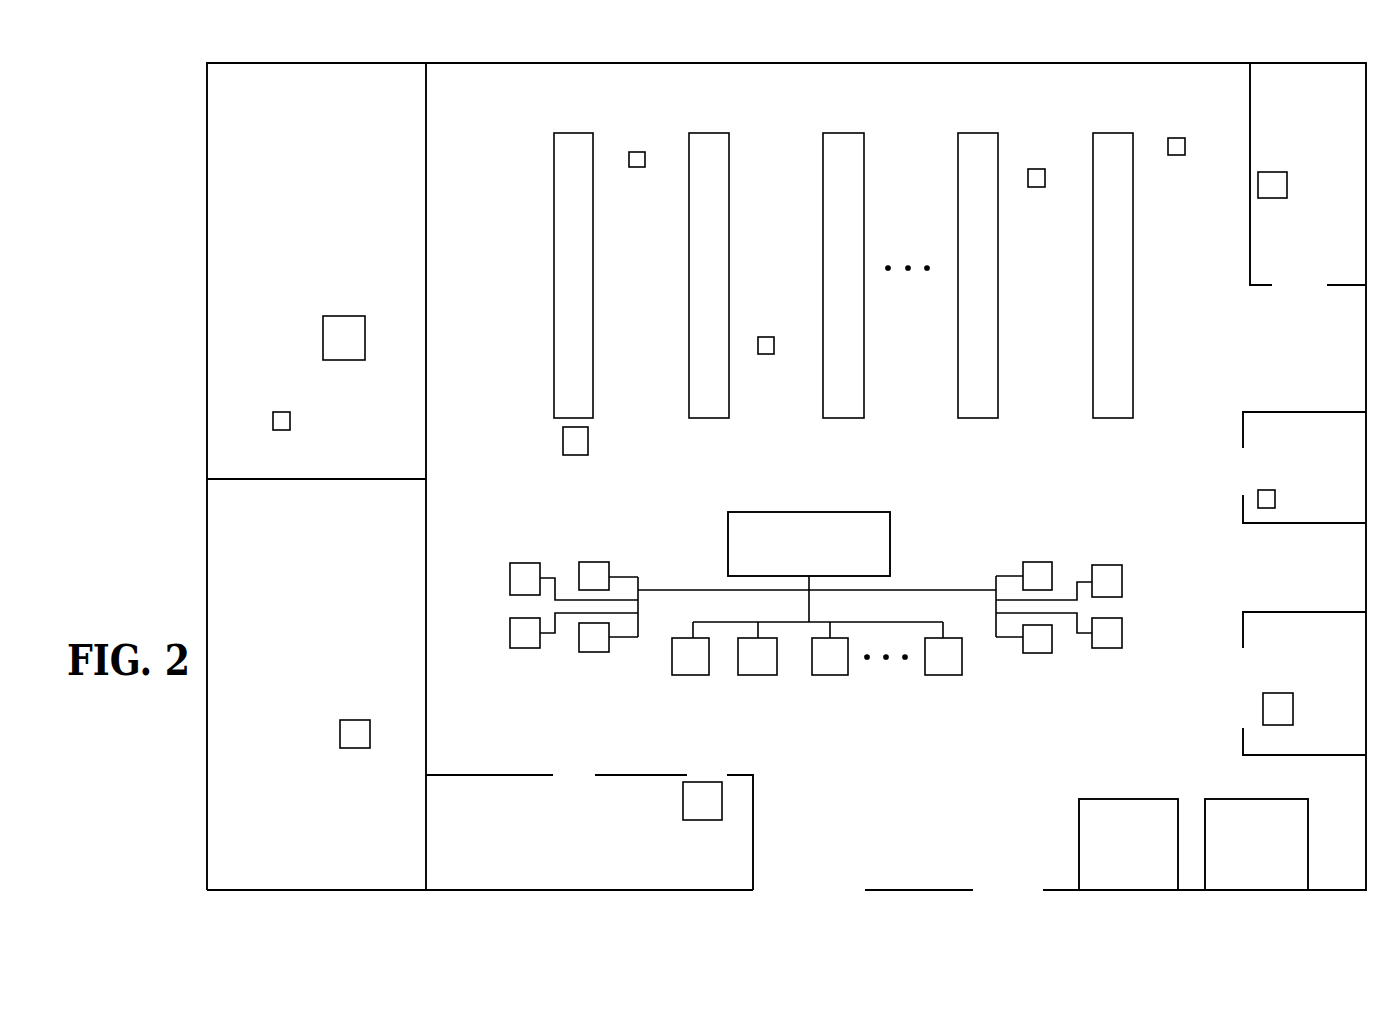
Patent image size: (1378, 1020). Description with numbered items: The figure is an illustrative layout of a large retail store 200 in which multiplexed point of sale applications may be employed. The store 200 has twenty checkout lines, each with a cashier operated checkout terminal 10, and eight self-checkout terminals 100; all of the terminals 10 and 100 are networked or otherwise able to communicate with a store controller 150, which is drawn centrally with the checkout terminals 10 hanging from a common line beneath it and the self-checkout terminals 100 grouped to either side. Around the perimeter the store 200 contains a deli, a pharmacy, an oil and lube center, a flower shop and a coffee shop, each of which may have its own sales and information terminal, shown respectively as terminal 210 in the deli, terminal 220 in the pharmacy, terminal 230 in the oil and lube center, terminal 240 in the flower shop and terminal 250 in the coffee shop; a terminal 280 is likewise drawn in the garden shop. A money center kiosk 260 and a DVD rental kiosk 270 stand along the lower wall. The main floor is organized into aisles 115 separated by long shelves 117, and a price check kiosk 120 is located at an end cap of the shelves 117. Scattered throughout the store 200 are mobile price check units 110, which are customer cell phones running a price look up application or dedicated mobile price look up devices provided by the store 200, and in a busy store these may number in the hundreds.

The store 200 is at (1223, 53).
The shelves 117 is at (1147, 85).
The aisles 115 is at (512, 291).
The mobile price check units 110 is at (1185, 123).
The price check kiosk 120 is at (563, 436).
The oil and lube center sales and information terminal 230 is at (323, 337).
The deli sales and information terminal 210 is at (1273, 198).
The flower shop sales and information terminal 240 is at (1275, 499).
The coffee shop sales and information terminal 250 is at (1293, 703).
The garden shop terminal 280 is at (352, 748).
The pharmacy sales and information terminal 220 is at (683, 798).
The money center kiosk 260 is at (1097, 799).
The DVD rental kiosk 270 is at (1230, 799).
The store controller 150 is at (807, 512).
The cashier operated checkout terminals 10 is at (943, 675).
The self-checkout terminals 100 is at (1122, 675).